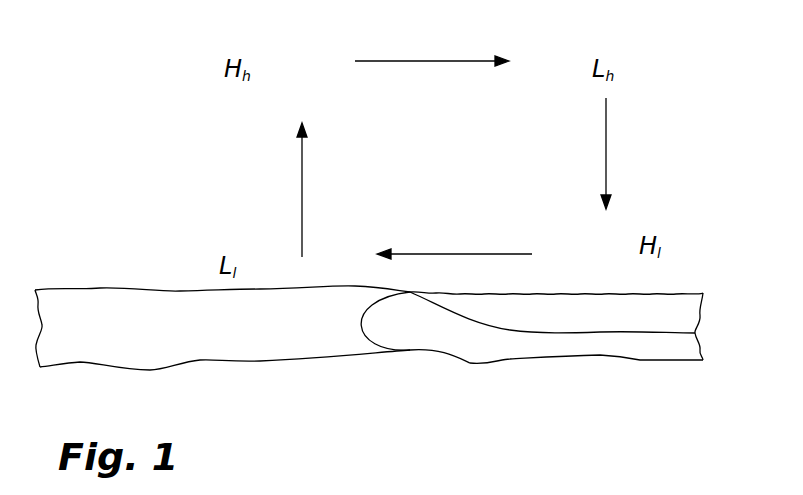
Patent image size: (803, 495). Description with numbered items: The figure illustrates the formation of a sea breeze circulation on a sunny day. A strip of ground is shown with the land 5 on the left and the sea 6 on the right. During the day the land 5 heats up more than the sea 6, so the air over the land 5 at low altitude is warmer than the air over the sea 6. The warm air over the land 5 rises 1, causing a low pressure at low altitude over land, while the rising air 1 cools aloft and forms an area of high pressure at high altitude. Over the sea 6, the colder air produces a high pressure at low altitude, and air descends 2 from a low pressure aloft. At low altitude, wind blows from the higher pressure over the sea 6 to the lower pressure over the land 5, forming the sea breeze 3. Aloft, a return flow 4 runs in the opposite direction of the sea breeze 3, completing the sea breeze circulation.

The rising air 1 is at (302, 192).
The descending air 2 is at (606, 172).
The sea breeze 3 is at (454, 241).
The return flow 4 is at (431, 61).
The land 5 is at (262, 340).
The sea 6 is at (606, 322).